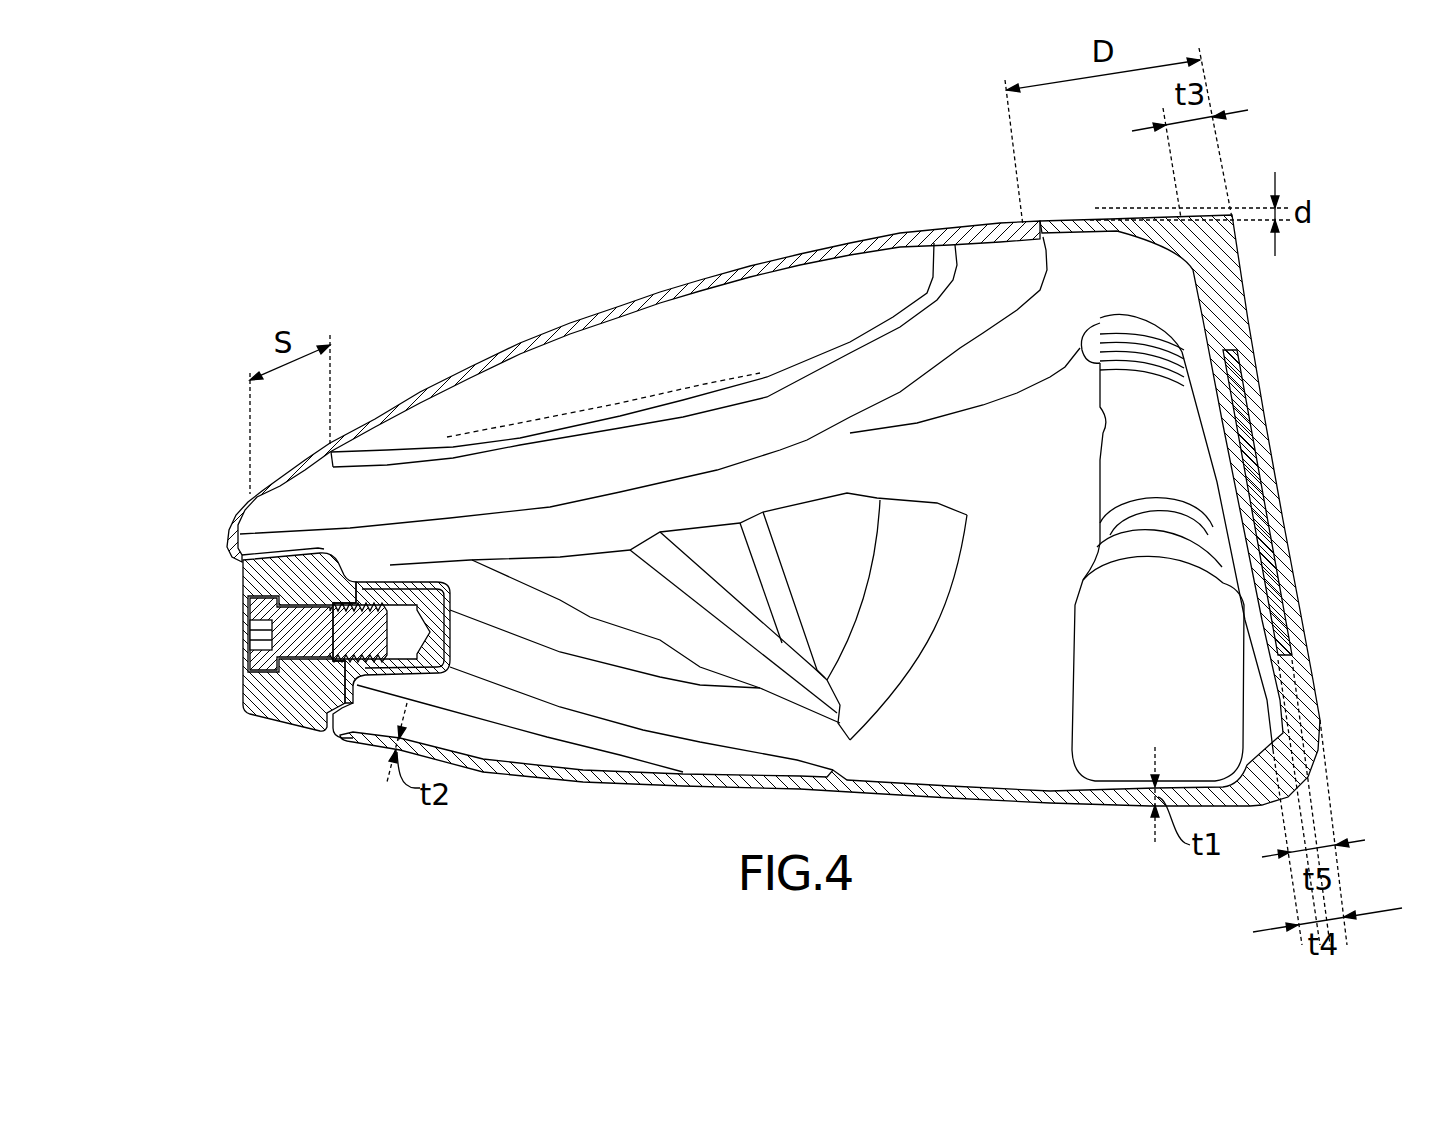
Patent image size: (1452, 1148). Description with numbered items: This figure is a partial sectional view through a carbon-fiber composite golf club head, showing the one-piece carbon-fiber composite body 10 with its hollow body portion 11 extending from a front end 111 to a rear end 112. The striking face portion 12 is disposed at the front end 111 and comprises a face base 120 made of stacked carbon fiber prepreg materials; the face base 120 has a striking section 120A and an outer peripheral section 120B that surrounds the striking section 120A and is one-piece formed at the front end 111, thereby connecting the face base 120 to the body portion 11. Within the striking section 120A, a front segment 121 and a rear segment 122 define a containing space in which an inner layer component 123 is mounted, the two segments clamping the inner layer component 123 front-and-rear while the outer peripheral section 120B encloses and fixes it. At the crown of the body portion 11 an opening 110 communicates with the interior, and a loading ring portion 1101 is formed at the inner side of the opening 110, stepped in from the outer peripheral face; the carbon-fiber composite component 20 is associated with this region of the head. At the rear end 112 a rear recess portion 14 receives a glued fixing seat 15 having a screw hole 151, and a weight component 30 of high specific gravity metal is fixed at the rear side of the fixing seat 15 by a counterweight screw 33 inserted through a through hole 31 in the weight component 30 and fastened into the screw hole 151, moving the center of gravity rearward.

The carbon-fiber composite body 10 is at (1092, 838).
The body portion 11 is at (965, 808).
The striking face portion 12 is at (1310, 445).
The rear recess portion 14 is at (432, 596).
The fixing seat 15 is at (430, 665).
The carbon-fiber composite component 20 is at (563, 300).
The weight component 30 is at (239, 702).
The through hole 31 is at (303, 647).
The counterweight screw 33 is at (257, 613).
The opening 110 is at (1020, 224).
The front end 111 is at (1235, 513).
The rear end 112 is at (245, 534).
The face base 120 is at (1298, 496).
The striking section 120A is at (1302, 558).
The outer peripheral section 120B is at (1220, 303).
The front segment 121 is at (1257, 403).
The rear segment 122 is at (1220, 380).
The inner layer component 123 is at (1280, 607).
The screw hole 151 is at (348, 645).
The loading ring portion 1101 is at (930, 287).